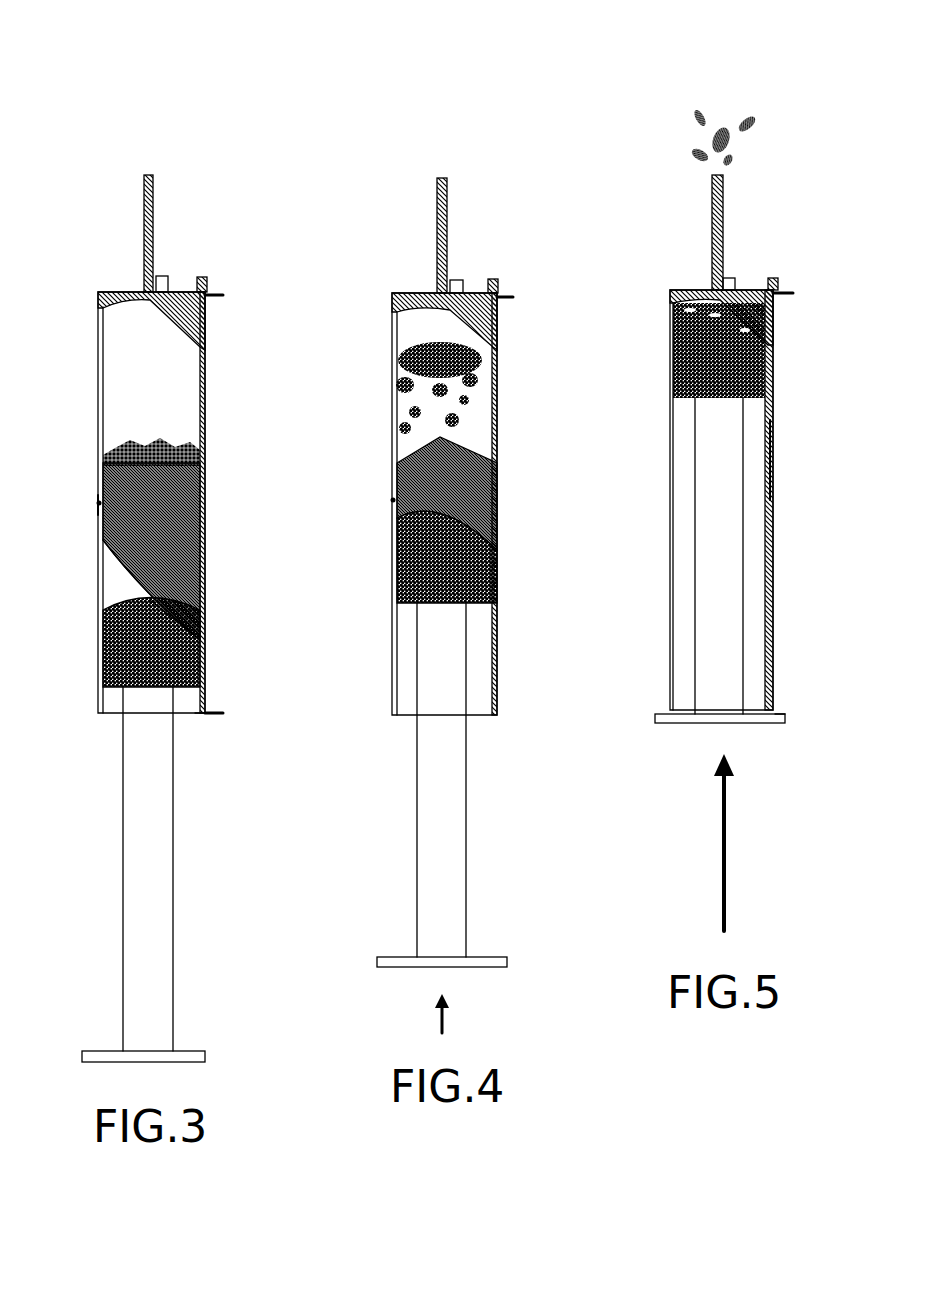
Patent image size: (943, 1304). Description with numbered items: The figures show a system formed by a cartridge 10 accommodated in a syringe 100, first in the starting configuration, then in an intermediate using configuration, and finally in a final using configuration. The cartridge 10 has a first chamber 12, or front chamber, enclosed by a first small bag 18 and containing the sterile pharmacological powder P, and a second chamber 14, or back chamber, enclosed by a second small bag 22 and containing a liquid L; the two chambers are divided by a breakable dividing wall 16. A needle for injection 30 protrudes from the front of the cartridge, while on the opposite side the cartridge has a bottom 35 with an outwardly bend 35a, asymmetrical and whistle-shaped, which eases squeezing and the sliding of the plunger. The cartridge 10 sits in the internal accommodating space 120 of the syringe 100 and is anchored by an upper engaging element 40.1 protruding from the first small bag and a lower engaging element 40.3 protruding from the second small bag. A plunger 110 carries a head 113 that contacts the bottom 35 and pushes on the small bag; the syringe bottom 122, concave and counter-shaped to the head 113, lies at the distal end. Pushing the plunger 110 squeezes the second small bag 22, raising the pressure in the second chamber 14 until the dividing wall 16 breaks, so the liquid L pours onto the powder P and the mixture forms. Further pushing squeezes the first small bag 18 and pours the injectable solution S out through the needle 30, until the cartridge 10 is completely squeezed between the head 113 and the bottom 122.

In FIG. 5, the cartridge 10 is at (766, 458).
In FIG. 3, the first chamber 12 is at (174, 404).
In FIG. 3, the second chamber 14 is at (189, 538).
In FIG. 3, the breakable dividing wall 16 is at (98, 505).
In FIG. 3, the first small bag 18 is at (99, 374).
In FIG. 4, the first small bag 18 is at (393, 384).
In FIG. 3, the second small bag 22 is at (97, 504).
In FIG. 4, the second small bag 22 is at (391, 500).
In FIG. 3, the needle for injection 30 is at (153, 218).
In FIG. 4, the needle for injection 30 is at (447, 215).
In FIG. 5, the needle for injection 30 is at (724, 207).
In FIG. 3, the bottom 35 is at (124, 575).
In FIG. 3, the outwardly bend 35a is at (192, 593).
In FIG. 3, the upper engaging element 40.1 is at (216, 294).
In FIG. 3, the lower engaging element 40.3 is at (220, 713).
In FIG. 5, the syringe 100 is at (671, 594).
In FIG. 3, the plunger 110 is at (176, 950).
In FIG. 4, the plunger 110 is at (468, 811).
In FIG. 5, the plunger 110 is at (744, 499).
In FIG. 3, the head 113 is at (106, 658).
In FIG. 4, the head 113 is at (412, 554).
In FIG. 5, the head 113 is at (694, 340).
In FIG. 3, the internal accommodating space 120 is at (106, 563).
In FIG. 3, the bottom 122 is at (207, 320).
In FIG. 4, the bottom 122 is at (499, 319).
In FIG. 5, the bottom 122 is at (776, 313).
In FIG. 3, the sterile pharmacological powder P is at (200, 458).
In FIG. 4, the sterile pharmacological powder P is at (482, 368).
In FIG. 3, the liquid L is at (203, 500).
In FIG. 4, the liquid L is at (499, 485).
In FIG. 5, the injectable solution S is at (723, 130).